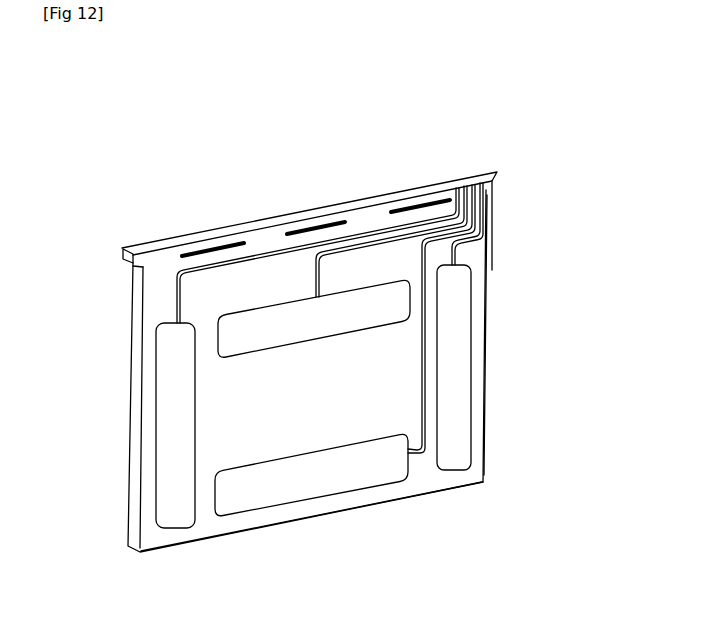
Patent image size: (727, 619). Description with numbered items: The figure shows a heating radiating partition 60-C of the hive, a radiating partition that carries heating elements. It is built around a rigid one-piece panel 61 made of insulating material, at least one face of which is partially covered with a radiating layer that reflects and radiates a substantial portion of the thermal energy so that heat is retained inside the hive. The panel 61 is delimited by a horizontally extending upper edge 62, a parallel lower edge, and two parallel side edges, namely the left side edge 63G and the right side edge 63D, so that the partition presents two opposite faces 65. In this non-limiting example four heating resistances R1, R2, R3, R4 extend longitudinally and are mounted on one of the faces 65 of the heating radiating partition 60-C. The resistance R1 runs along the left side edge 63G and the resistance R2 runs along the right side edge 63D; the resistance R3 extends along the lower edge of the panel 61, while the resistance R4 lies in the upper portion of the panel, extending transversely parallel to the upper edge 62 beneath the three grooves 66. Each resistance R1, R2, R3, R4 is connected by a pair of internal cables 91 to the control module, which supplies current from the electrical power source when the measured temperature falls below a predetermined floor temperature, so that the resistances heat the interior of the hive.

The heating radiating partition 60-C is at (364, 107).
The panel 61 is at (164, 236).
The upper edge 62 is at (298, 212).
The left side edge 63G is at (132, 386).
The right side edge 63D is at (486, 330).
The face 65 is at (331, 514).
The grooves 66 is at (216, 253).
The internal cables 91 is at (484, 238).
The heating resistance R1 is at (170, 477).
The heating resistance R2 is at (458, 405).
The heating resistance R3 is at (268, 497).
The heating resistance R4 is at (272, 342).